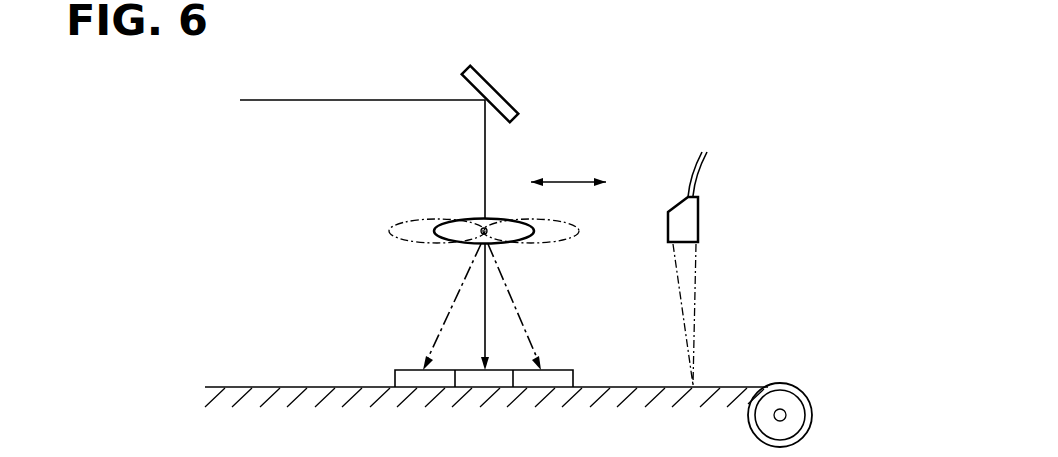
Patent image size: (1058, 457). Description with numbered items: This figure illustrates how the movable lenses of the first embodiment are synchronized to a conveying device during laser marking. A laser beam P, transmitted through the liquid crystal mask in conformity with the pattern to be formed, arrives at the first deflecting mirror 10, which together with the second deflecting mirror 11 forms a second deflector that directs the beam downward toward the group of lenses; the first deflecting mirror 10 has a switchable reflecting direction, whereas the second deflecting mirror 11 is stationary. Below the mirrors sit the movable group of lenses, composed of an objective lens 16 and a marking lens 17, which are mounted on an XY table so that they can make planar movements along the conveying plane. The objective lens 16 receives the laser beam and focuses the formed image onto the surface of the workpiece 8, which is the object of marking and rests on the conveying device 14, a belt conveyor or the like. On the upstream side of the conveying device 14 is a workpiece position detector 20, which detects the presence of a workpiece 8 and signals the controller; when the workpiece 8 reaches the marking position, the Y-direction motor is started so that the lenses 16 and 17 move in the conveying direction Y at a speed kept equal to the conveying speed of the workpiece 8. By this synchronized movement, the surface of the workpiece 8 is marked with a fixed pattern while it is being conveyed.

The workpiece 8 is at (570, 370).
The first deflecting mirror 10 is at (564, 94).
The second deflecting mirror 11 is at (508, 101).
The conveying device 14 is at (230, 387).
The objective lens 16 is at (458, 196).
The marking lens 17 is at (473, 220).
The workpiece position detector 20 is at (699, 212).
The laser beam P is at (322, 100).
The Y direction Y is at (568, 169).